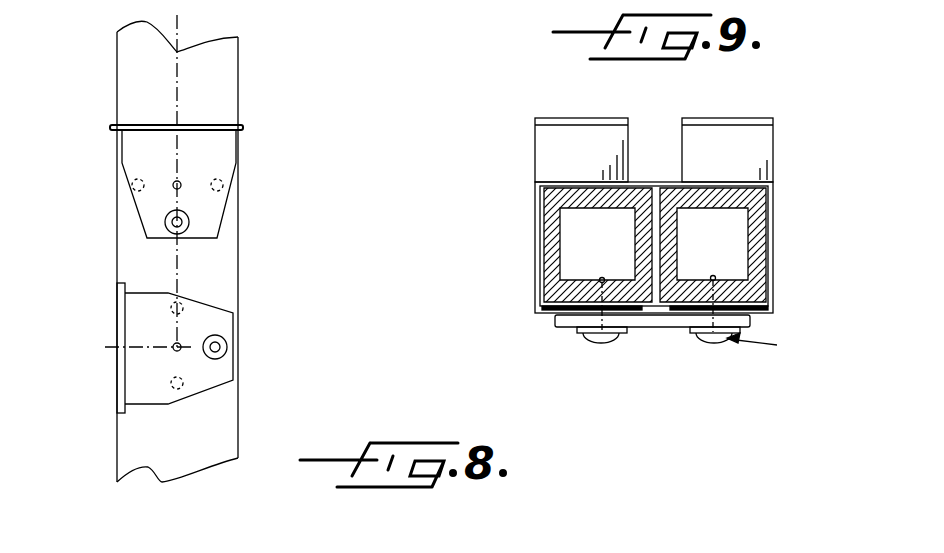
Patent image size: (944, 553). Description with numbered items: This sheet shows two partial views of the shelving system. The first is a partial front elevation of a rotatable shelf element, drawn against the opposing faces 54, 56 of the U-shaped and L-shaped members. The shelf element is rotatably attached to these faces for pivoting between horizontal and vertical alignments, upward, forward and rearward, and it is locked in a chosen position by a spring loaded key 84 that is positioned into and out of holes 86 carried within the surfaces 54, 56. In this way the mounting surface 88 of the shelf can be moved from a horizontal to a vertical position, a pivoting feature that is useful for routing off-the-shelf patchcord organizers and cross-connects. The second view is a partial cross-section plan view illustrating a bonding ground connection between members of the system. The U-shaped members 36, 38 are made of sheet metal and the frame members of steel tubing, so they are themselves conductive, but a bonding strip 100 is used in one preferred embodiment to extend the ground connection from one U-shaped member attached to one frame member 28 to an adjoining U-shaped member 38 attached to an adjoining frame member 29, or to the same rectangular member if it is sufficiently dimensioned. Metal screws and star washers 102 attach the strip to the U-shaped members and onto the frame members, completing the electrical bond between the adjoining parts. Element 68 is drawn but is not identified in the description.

In FIG. 8, the opposing face 54 is at (227, 248).
In FIG. 8, the opposing face 56 is at (230, 84).
In FIG. 8, the mounting surface 88 is at (236, 121).
In FIG. 8, the spring loaded key 84 is at (222, 342).
In FIG. 8, the holes 86 is at (130, 192).
In FIG. 9, the upright member 68 is at (610, 150).
In FIG. 9, the U-shaped member 36 is at (776, 300).
In FIG. 9, the adjoining frame member 29 is at (550, 248).
In FIG. 9, the frame member 28 is at (757, 238).
In FIG. 9, the U-shaped member 38 is at (537, 312).
In FIG. 9, the bonding strip 100 is at (668, 326).
In FIG. 9, the metal screws and star washers 102 is at (779, 346).